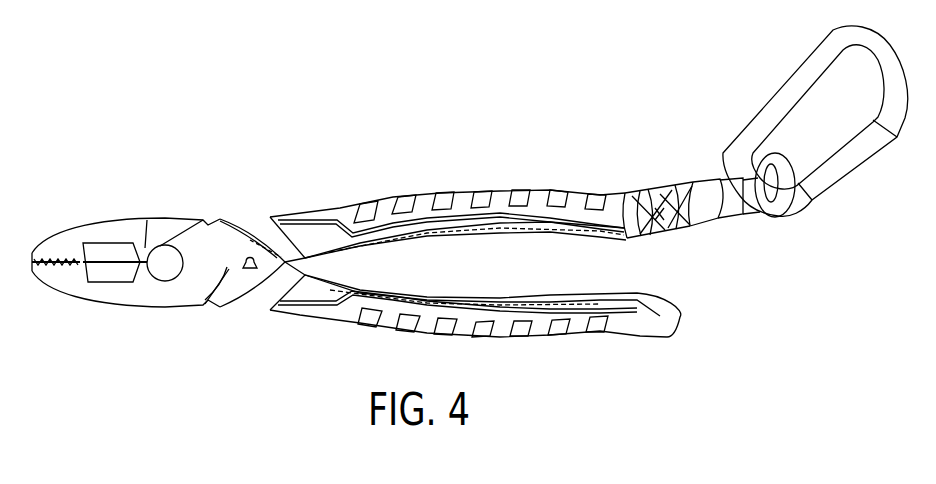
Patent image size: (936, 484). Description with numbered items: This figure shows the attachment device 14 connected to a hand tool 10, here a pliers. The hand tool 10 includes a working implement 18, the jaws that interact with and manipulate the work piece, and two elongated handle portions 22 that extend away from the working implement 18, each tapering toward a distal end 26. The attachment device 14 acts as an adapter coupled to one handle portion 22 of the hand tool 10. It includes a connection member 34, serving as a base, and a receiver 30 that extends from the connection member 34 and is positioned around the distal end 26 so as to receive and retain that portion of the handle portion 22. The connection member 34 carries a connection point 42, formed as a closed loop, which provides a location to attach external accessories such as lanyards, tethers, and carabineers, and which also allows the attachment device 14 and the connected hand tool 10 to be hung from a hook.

The hand tool 10 is at (393, 157).
The attachment device 14 is at (727, 168).
The working implement 18 is at (110, 243).
The handle portion 22 is at (505, 193).
The distal end 26 is at (672, 238).
The receiver 30 is at (637, 193).
The connection member 34 is at (703, 188).
The connection point 42 is at (756, 163).